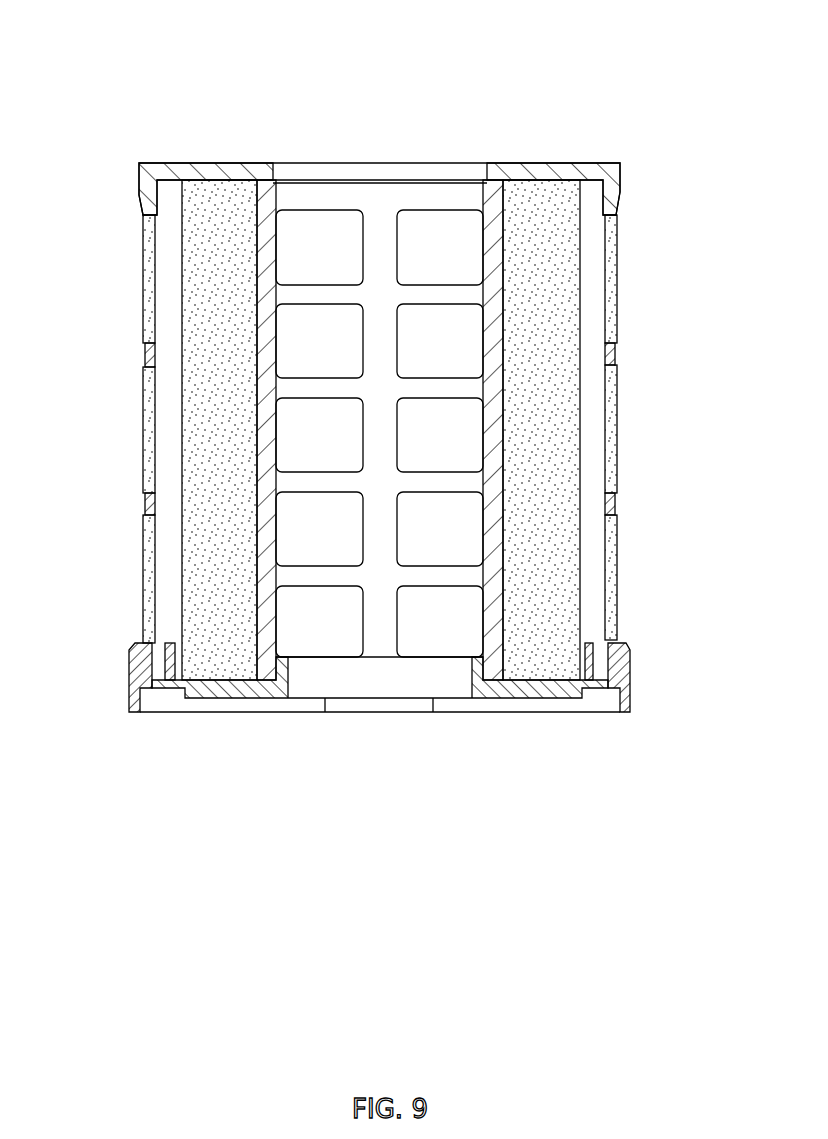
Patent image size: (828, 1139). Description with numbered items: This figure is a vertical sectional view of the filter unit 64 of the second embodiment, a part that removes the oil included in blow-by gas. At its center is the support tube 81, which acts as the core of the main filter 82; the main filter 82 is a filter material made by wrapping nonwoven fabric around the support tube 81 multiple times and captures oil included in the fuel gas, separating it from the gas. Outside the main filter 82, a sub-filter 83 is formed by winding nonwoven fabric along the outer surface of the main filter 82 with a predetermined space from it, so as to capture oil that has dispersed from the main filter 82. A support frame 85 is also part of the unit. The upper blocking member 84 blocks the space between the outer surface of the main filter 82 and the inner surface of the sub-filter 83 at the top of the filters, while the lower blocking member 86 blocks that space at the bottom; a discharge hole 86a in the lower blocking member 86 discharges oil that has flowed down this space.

The filter unit 64 is at (247, 112).
The support tube 81 is at (380, 207).
The main filter 82 is at (197, 266).
The sub-filter 83 is at (142, 430).
The upper blocking member 84 is at (540, 162).
The support frame 85 is at (145, 354).
The lower blocking member 86 is at (528, 700).
The discharge hole 86a is at (160, 690).